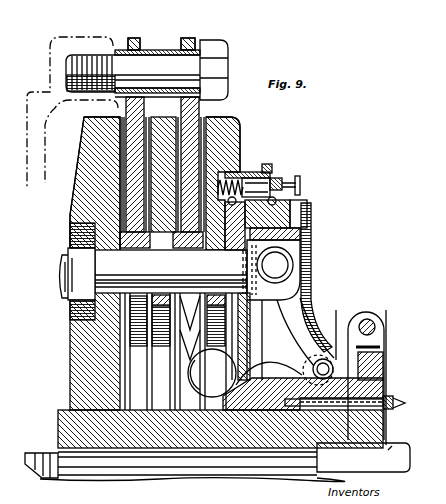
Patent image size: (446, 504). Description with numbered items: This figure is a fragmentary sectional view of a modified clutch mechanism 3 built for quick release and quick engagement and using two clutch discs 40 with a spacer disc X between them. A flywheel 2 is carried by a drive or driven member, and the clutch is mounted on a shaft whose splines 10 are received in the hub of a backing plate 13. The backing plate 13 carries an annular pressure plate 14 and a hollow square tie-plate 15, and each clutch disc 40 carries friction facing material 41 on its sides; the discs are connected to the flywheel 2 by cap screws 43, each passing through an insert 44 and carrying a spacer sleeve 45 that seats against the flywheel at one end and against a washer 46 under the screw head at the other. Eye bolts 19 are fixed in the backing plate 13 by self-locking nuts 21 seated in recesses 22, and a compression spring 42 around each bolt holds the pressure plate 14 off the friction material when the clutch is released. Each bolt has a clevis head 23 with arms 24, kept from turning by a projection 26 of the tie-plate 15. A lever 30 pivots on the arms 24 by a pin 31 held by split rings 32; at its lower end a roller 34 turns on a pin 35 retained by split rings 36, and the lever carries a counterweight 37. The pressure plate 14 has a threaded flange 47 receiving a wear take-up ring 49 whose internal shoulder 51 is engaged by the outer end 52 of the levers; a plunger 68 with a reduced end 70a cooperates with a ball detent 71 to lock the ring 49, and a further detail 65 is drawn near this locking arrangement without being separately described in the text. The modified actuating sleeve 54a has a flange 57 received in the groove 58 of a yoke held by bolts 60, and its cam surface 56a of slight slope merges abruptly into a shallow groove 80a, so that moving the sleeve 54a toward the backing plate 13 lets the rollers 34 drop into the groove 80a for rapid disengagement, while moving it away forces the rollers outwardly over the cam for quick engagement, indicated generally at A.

The flywheel 2 is at (80, 36).
The clutch mechanism 3 is at (66, 212).
The splines 10 is at (88, 468).
The backing plate 13 is at (72, 352).
The pressure plate 14 is at (242, 130).
The tie-plate 15 is at (246, 170).
The eye bolts 19 is at (58, 268).
The self-locking nut 21 is at (73, 246).
The recesses 22 is at (75, 308).
The bolt head 23 is at (312, 284).
The arms 24 is at (305, 233).
The projection 26 is at (230, 247).
The lever 30 is at (311, 332).
The pin 31 is at (302, 252).
The split rings 32 is at (255, 264).
The roller 34 is at (333, 387).
The pin 35 is at (310, 366).
The split rings 36 is at (324, 358).
The counterweight 37 is at (212, 373).
The clutch disc 40 is at (135, 38).
The friction facing material 41 is at (100, 136).
The compression spring 42 is at (185, 321).
The cap screws 43 is at (226, 50).
The insert 44 is at (130, 40).
The spacer sleeve 45 is at (158, 49).
The washer 46 is at (205, 96).
The flange 47 is at (265, 164).
The wear take-up ring 49 is at (290, 266).
The internal shoulder 51 is at (308, 216).
The outer end of lever 52 is at (312, 206).
The actuating sleeve 54a is at (387, 397).
The cam surface 56a is at (268, 378).
The flange 57 is at (385, 362).
The groove 58 is at (386, 345).
The bolts 60 is at (370, 318).
The ball 65 is at (284, 206).
The plunger 68 is at (300, 184).
The reduced end of plunger 70a is at (272, 180).
The ball detent 71 is at (302, 195).
The shallow groove 80a is at (340, 355).
The arrow A is at (389, 451).
The spacer disc X is at (163, 116).